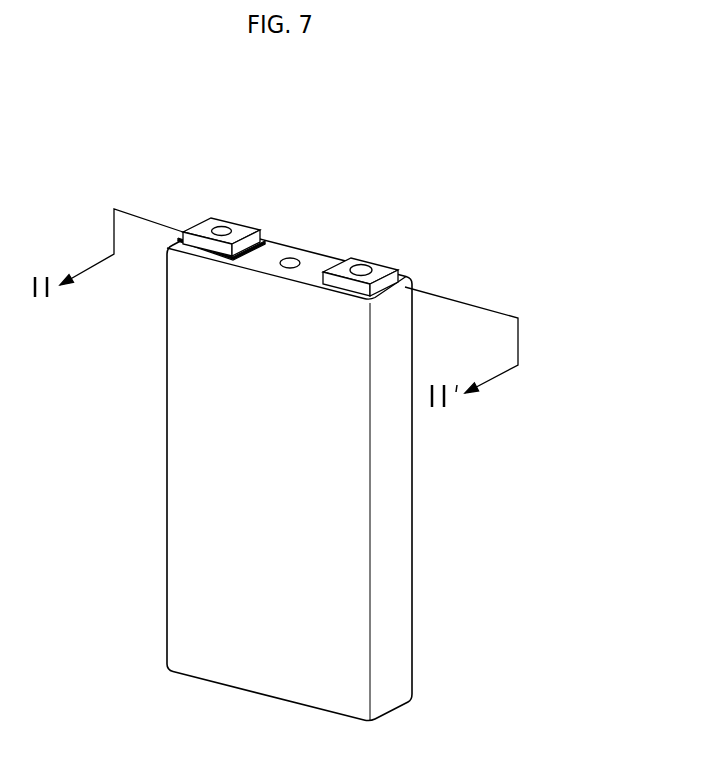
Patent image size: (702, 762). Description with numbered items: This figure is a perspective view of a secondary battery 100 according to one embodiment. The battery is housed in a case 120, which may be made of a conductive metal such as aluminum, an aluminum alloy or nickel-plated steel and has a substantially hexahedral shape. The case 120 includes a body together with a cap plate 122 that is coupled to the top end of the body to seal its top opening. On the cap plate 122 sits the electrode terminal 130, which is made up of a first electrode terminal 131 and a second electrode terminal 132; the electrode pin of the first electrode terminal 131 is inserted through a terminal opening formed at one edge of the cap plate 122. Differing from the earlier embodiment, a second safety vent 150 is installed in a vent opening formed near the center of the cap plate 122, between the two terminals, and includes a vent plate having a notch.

The secondary battery 100 is at (458, 210).
The case 120 is at (417, 518).
The cap plate 122 is at (305, 280).
The electrode terminal 130 is at (368, 183).
The first electrode terminal 131 is at (312, 186).
The second electrode terminal 132 is at (370, 258).
The second safety vent 150 is at (280, 263).